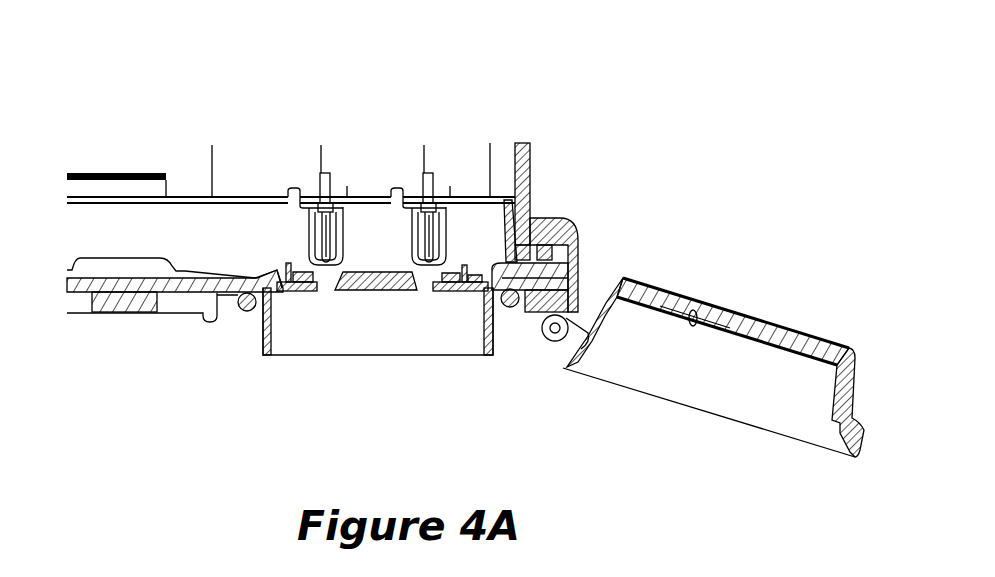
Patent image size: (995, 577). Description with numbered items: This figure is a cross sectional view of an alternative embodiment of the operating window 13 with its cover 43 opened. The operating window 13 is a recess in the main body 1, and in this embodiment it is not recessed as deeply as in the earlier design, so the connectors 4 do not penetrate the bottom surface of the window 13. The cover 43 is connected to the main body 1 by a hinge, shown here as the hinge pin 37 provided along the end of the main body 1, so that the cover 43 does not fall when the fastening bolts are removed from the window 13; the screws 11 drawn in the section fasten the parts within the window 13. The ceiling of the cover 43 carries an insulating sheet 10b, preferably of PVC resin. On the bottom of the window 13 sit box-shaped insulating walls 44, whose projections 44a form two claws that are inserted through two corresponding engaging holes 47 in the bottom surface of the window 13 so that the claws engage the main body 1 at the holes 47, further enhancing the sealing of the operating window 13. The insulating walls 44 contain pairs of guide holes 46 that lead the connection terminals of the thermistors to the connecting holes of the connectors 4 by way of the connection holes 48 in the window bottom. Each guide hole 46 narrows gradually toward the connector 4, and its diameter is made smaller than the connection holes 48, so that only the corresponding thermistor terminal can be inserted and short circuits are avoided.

The main body 1 is at (566, 216).
The connector 4 is at (385, 245).
The insulating sheet 10b is at (693, 310).
The screw 11 is at (246, 312).
The operating window 13 is at (372, 375).
The hinge pin 37 is at (557, 345).
The cover 43 is at (798, 330).
The insulating walls 44 is at (262, 335).
The projection of frame 44a is at (288, 265).
The guide holes 46 is at (323, 293).
The engaging holes 47 is at (270, 282).
The connection holes 48 is at (309, 262).